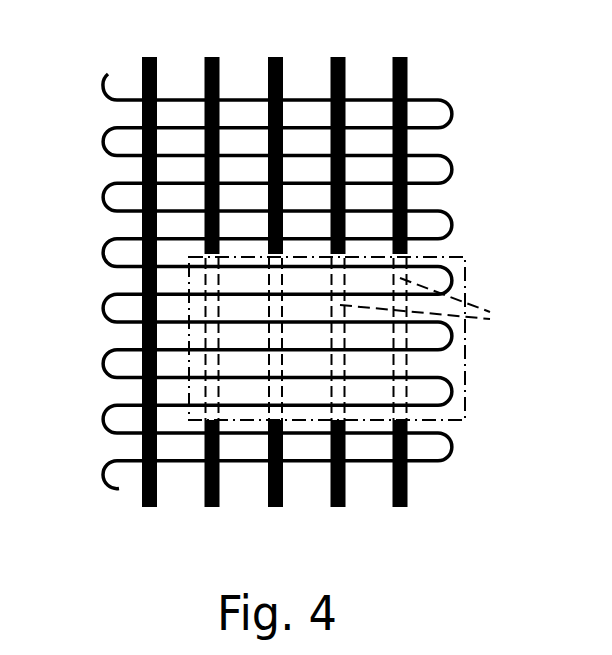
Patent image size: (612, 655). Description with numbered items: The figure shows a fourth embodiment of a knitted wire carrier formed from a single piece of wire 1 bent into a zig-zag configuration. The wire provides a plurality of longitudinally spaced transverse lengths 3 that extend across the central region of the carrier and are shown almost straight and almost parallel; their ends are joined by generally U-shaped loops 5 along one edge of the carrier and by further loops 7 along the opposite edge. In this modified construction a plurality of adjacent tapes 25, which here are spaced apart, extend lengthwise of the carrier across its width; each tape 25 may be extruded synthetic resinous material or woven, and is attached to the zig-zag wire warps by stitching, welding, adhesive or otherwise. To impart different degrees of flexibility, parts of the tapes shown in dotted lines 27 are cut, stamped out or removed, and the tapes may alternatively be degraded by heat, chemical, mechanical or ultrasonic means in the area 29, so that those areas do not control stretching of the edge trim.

The wire 1 is at (292, 251).
The transverse lengths 3 is at (254, 155).
The U-shaped loops 5 is at (452, 118).
The loops 7 is at (105, 298).
The tapes 25 is at (267, 495).
The dotted lines 27 is at (438, 309).
The area 29 is at (465, 358).